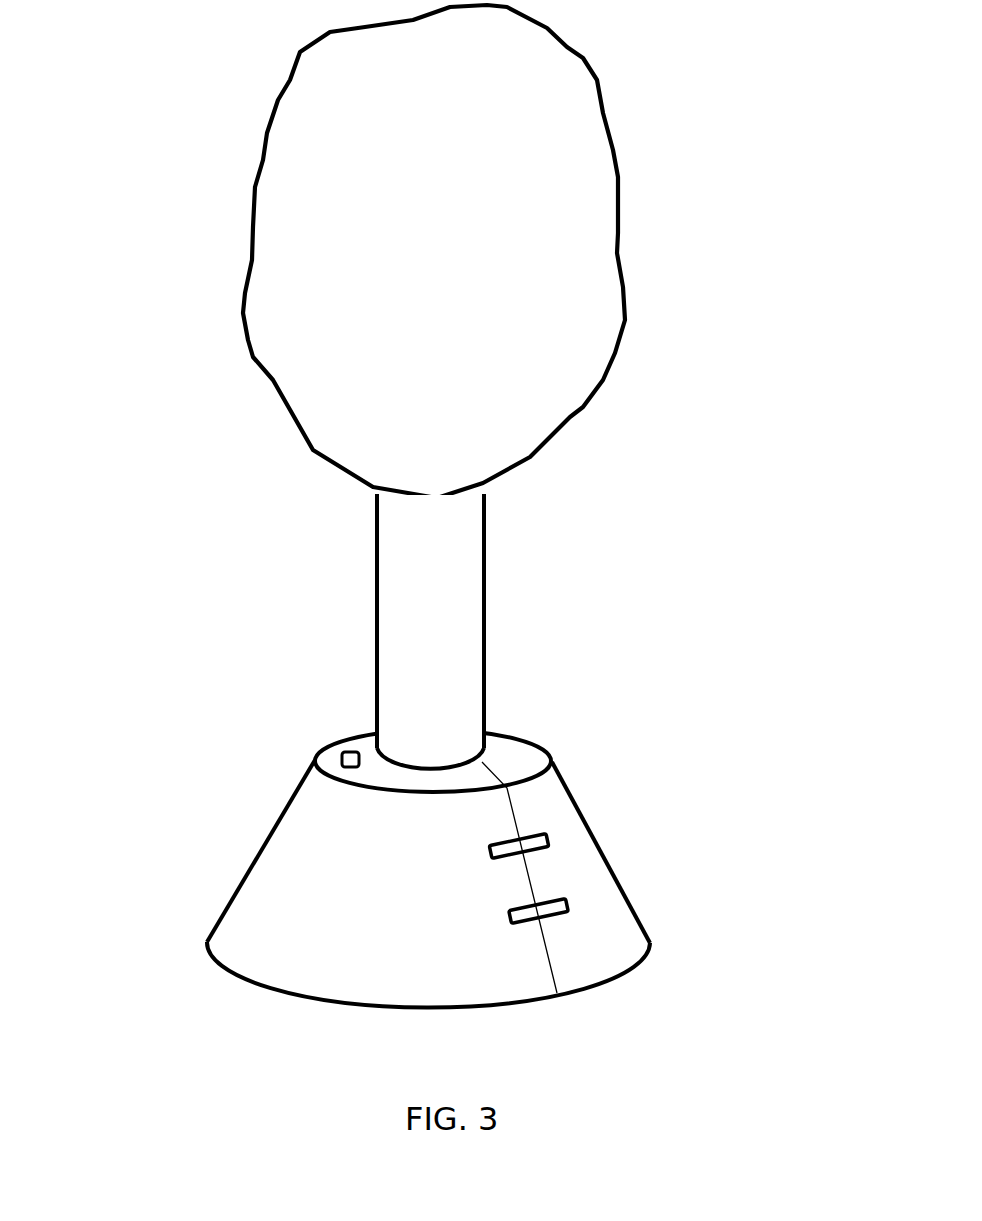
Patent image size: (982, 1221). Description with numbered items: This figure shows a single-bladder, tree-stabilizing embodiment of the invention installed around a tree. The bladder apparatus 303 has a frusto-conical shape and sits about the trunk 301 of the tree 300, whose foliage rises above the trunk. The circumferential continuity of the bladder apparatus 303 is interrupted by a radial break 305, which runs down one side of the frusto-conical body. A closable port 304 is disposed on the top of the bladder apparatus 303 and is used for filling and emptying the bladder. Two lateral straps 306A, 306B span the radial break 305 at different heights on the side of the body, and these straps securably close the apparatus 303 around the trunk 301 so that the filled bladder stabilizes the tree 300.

The tree 300 is at (249, 258).
The trunk 301 is at (374, 593).
The bladder apparatus 303 is at (320, 858).
The closable port 304 is at (339, 757).
The radial break 305 is at (494, 771).
The lateral strap 306A is at (555, 842).
The lateral strap 306B is at (575, 907).